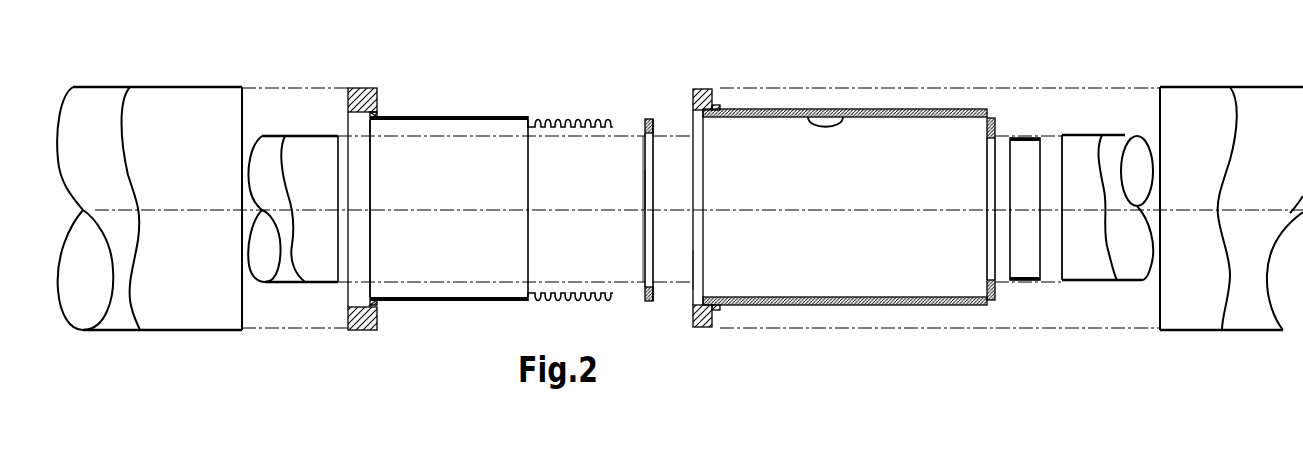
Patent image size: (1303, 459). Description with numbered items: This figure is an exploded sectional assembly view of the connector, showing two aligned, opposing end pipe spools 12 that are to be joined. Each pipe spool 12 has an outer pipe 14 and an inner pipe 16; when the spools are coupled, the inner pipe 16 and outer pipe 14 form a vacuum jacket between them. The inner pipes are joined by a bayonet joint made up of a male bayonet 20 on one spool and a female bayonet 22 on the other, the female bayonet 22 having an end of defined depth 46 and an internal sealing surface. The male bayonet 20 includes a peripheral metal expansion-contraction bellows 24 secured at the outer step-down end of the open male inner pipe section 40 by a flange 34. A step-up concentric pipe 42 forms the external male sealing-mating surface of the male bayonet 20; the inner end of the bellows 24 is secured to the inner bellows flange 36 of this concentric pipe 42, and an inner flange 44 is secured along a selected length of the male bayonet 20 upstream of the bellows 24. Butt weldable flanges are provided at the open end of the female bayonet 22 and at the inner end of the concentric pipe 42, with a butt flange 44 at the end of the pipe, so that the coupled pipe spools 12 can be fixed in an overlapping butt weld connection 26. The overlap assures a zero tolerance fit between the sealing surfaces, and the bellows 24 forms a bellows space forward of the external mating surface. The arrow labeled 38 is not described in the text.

The end pipe spool 12 is at (281, 328).
The outer pipe 14 is at (279, 88).
The inner pipe 16 is at (310, 136).
The male bayonet 20 is at (643, 140).
The female bayonet 22 is at (835, 110).
The expansion-contraction bellows 24 is at (568, 119).
The butt weld connection 26 is at (352, 88).
The flange 34 is at (652, 119).
The inner bellows flange 36 is at (528, 116).
The opening 38 is at (693, 268).
The male inner pipe section 40 is at (636, 192).
The concentric pipe 42 is at (428, 116).
The inner flange 44 is at (376, 112).
The end of defined depth 46 is at (996, 118).